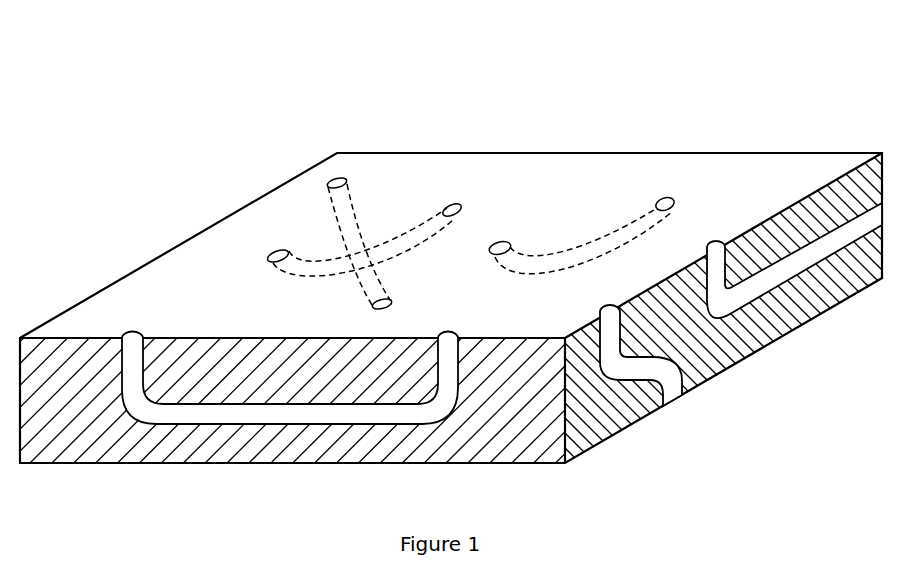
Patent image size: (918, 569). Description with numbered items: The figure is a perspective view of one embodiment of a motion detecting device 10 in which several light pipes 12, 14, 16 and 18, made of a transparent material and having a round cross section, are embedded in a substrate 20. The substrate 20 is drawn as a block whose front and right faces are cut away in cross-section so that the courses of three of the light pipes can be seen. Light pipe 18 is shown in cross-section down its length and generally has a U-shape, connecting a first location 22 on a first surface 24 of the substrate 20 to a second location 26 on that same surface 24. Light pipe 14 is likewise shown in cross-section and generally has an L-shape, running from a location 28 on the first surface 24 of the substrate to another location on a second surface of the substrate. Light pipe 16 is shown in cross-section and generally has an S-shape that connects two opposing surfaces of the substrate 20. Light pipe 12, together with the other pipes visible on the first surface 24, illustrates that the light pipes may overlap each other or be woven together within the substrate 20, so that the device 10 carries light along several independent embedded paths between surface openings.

The motion detecting device 10 is at (451, 242).
The light pipe 12 is at (311, 262).
The light pipe 14 is at (777, 263).
The light pipe 16 is at (697, 380).
The light pipe 18 is at (127, 405).
The substrate 20 is at (65, 433).
The first location 22 is at (130, 331).
The first surface 24 is at (217, 250).
The second location 26 is at (448, 333).
The location 28 is at (714, 242).